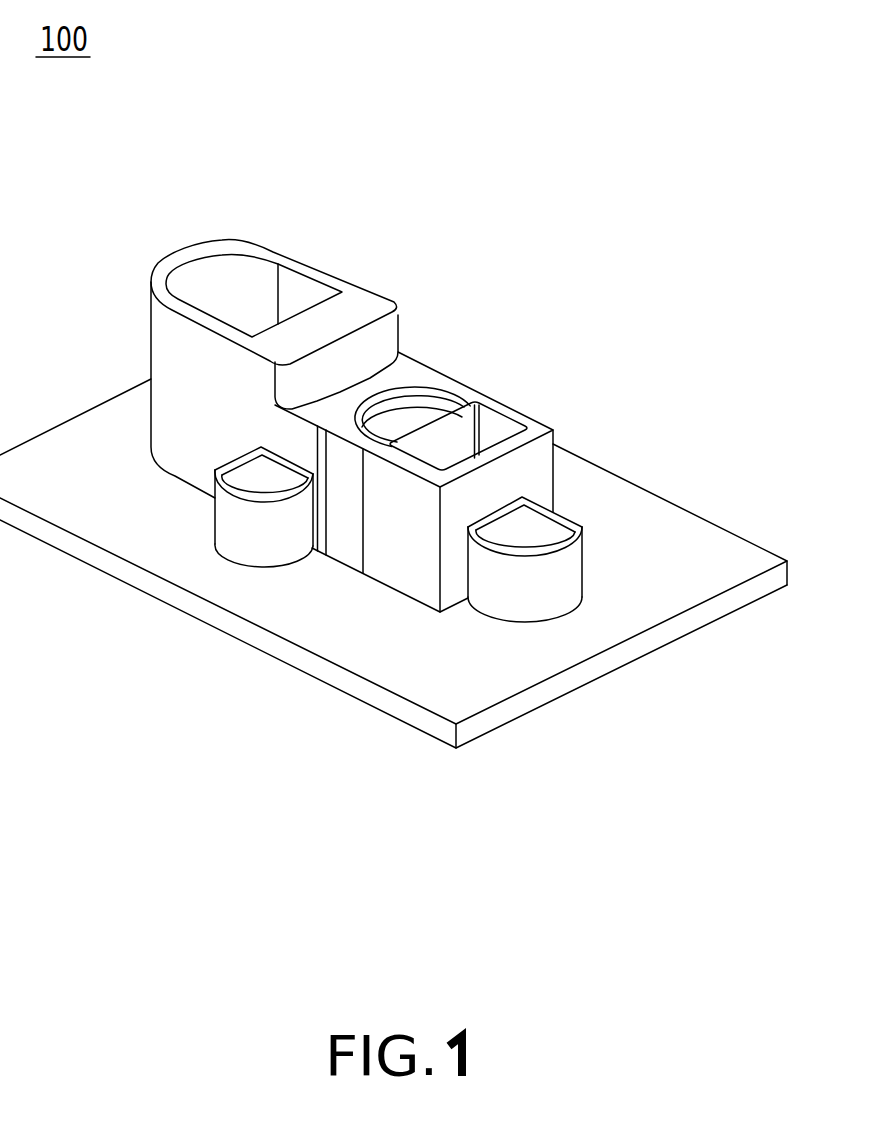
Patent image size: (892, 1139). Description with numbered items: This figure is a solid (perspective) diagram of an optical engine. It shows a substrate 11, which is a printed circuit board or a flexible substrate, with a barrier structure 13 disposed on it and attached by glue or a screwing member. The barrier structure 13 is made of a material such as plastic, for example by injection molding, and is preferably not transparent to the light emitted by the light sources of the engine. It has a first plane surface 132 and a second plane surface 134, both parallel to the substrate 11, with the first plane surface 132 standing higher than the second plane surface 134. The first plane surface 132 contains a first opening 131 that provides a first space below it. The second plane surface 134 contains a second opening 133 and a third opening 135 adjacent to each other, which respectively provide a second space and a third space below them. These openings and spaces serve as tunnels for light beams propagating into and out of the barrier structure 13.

The substrate 11 is at (667, 635).
The barrier structure 13 is at (293, 380).
The first opening 131 is at (255, 284).
The first plane surface 132 is at (345, 332).
The second opening 133 is at (418, 417).
The second plane surface 134 is at (377, 374).
The third opening 135 is at (493, 433).